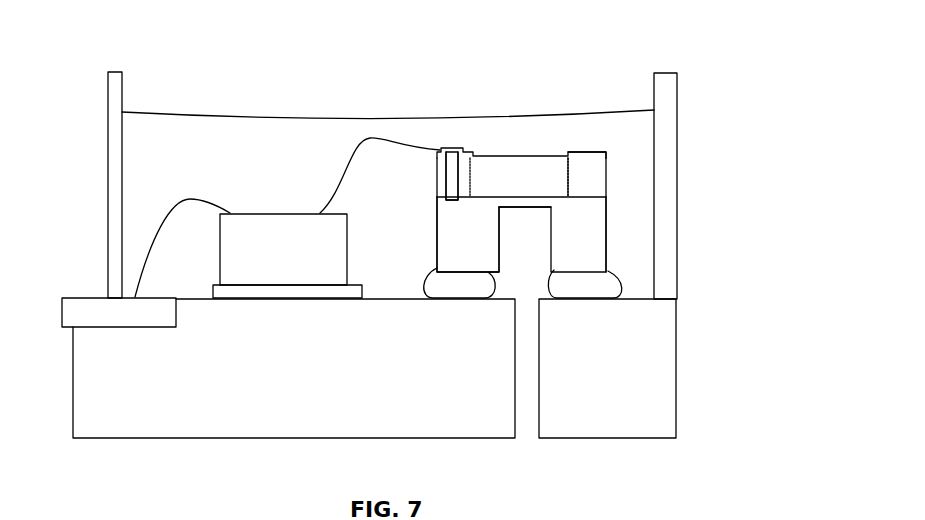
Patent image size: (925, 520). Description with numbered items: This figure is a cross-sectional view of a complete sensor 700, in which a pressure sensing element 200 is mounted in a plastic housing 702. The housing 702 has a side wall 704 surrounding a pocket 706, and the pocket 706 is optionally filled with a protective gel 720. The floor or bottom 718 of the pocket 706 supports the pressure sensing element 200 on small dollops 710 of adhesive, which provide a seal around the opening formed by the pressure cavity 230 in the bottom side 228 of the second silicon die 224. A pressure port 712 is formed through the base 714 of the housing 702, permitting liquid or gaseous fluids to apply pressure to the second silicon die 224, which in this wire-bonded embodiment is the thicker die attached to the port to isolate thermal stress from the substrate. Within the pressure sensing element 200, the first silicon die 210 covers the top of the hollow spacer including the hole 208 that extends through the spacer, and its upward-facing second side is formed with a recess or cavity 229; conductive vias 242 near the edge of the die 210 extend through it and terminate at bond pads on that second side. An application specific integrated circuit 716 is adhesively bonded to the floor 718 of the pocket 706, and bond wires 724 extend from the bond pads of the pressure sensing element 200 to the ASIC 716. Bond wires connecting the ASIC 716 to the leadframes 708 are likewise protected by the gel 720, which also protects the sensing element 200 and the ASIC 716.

The complete sensor 700 is at (760, 34).
The pocket 706 is at (231, 51).
The side wall 704 is at (118, 110).
The protective gel 720 is at (244, 125).
The leadframes 708 is at (90, 296).
The base 714 is at (461, 443).
The plastic housing 702 is at (679, 316).
The pressure port 712 is at (523, 425).
The application specific integrated circuit (ASIC) 716 is at (305, 261).
The floor or bottom of the pocket 718 is at (189, 298).
The bond wires 724 is at (197, 200).
The pressure sensing element 200 is at (464, 149).
The conductive vias 242 is at (447, 168).
The hole 208 is at (561, 163).
The first silicon die 210 is at (600, 155).
The recess or cavity 229 is at (558, 151).
The second silicon die 224 is at (612, 239).
The second side of the second silicon die 228 is at (455, 272).
The pressure cavity 230 is at (550, 241).
The dollops of adhesive 710 is at (440, 283).